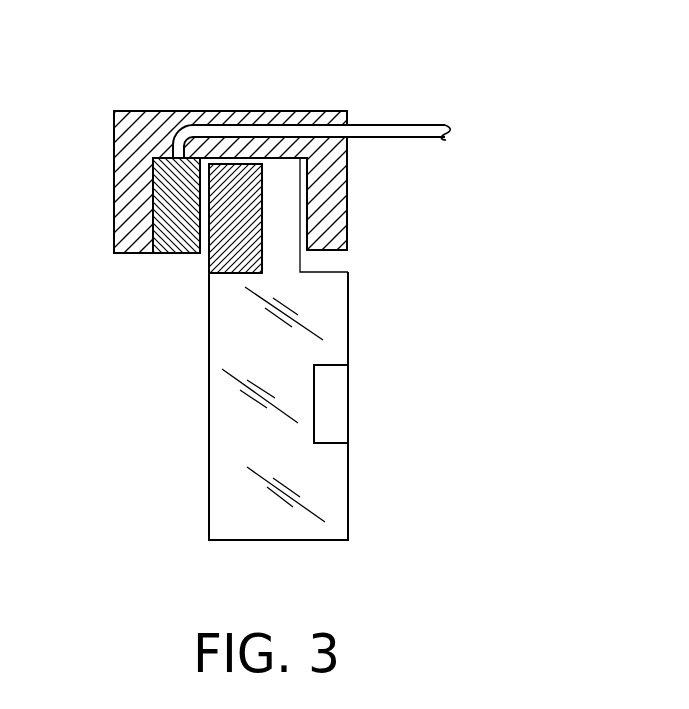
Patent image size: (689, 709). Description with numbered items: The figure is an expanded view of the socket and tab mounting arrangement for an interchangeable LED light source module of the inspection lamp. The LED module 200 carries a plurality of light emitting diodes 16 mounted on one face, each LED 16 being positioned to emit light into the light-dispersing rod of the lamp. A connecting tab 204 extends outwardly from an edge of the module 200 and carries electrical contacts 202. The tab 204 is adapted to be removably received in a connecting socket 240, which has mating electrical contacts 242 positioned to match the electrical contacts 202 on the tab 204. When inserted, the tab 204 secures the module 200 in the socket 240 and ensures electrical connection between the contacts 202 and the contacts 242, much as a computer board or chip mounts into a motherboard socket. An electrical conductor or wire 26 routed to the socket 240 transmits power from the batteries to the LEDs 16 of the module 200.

The light emitting diode 16 is at (328, 392).
The electrical conductor 26 is at (418, 124).
The LED module 200 is at (322, 477).
The electrical contacts 202 is at (233, 188).
The connecting tab 204 is at (275, 180).
The connecting socket 240 is at (340, 202).
The mating electrical contacts 242 is at (171, 187).